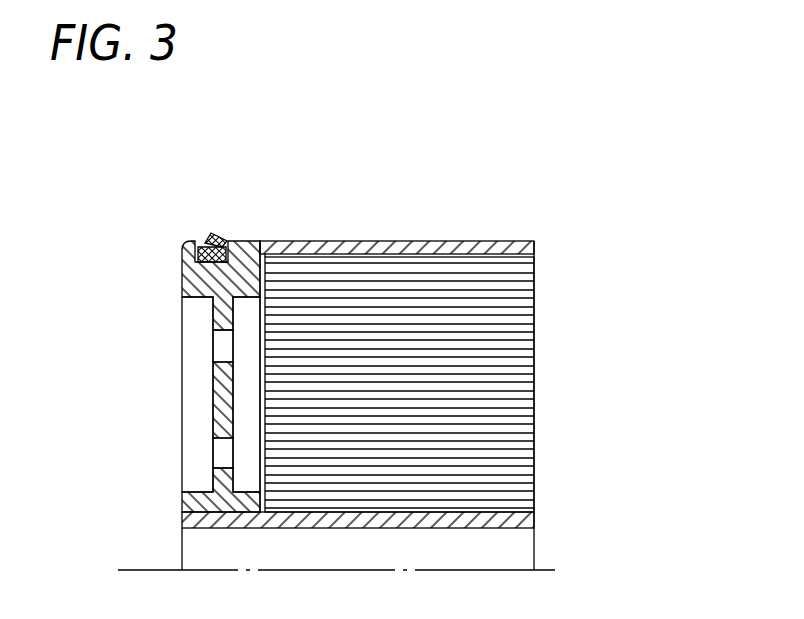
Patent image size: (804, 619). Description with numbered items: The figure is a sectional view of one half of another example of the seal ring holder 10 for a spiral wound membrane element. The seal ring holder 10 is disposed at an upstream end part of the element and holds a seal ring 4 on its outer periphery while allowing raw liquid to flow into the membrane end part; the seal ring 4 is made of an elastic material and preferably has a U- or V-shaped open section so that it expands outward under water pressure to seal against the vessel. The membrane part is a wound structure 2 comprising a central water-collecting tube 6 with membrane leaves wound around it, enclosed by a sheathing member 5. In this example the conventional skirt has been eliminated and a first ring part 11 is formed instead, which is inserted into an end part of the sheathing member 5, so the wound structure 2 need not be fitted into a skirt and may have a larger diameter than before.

The wound structure 2 is at (365, 300).
The seal ring 4 is at (210, 237).
The sheathing member 5 is at (450, 243).
The water-collecting tube 6 is at (182, 522).
The seal ring holder 10 is at (163, 351).
The first ring part 11 is at (258, 247).